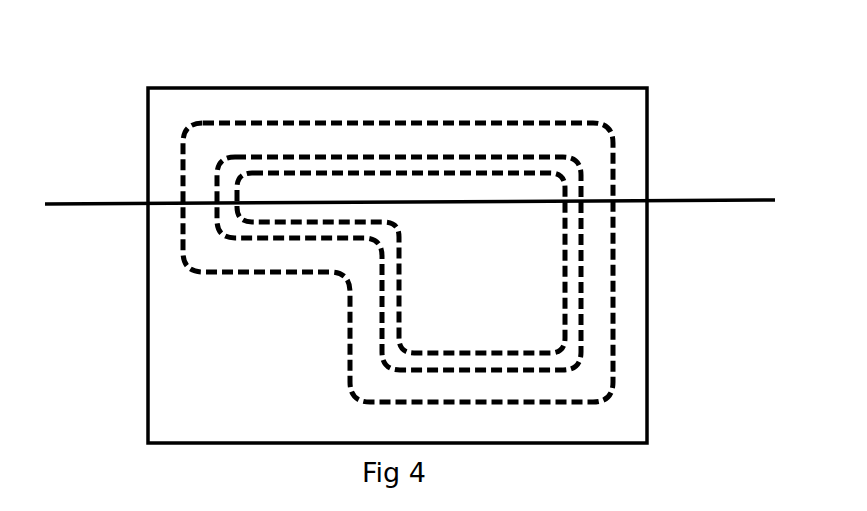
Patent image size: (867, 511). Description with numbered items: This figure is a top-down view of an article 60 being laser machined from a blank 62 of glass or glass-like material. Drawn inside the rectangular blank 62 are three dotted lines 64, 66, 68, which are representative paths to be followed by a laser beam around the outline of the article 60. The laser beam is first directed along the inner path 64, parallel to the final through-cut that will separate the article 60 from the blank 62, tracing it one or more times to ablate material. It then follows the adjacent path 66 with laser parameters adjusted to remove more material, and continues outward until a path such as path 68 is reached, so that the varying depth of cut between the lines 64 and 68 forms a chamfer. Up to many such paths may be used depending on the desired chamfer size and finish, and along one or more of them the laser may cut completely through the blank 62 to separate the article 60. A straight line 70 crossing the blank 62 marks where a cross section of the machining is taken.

The article 60 is at (465, 256).
The blank 62 is at (198, 88).
The path 64 is at (565, 267).
The path 66 is at (582, 295).
The path 68 is at (614, 312).
The line 70 is at (95, 203).